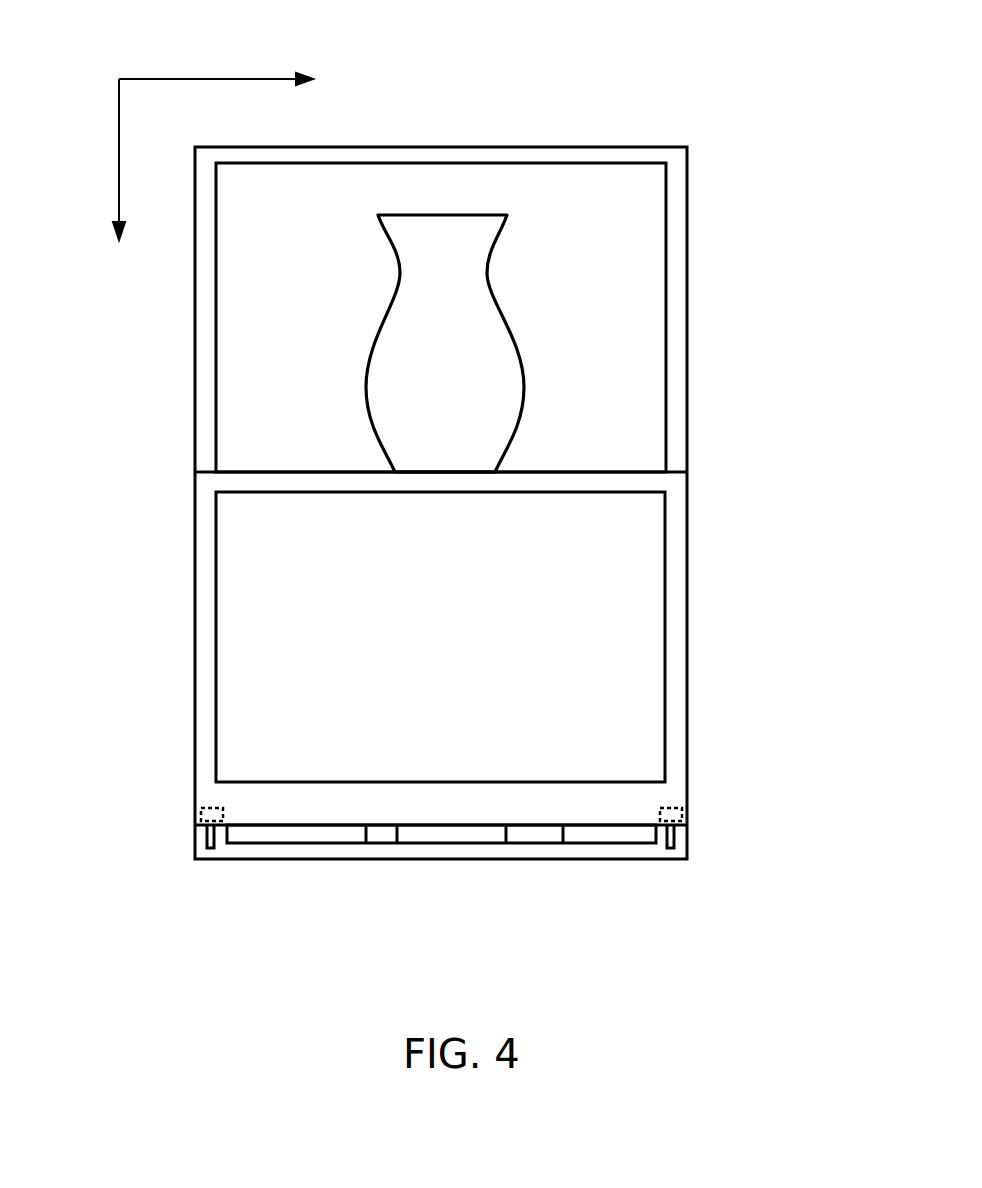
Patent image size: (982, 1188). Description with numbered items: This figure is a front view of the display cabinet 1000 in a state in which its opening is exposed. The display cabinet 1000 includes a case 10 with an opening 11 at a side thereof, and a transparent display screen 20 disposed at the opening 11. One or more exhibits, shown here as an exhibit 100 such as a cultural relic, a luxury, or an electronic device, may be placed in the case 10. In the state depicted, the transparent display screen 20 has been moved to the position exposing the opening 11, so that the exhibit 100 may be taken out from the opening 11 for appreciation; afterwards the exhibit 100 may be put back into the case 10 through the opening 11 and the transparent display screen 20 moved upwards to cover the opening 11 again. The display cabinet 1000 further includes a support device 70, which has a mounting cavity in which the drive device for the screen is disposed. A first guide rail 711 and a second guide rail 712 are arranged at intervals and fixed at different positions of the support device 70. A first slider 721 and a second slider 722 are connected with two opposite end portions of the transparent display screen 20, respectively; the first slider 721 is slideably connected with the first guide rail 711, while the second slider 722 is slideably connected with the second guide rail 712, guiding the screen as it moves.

The display cabinet 1000 is at (127, 32).
The case 10 is at (670, 235).
The opening 11 is at (628, 316).
The exhibit 100 is at (450, 375).
The transparent display screen 20 is at (668, 652).
The support device 70 is at (595, 848).
The first slider 721 is at (670, 815).
The second slider 722 is at (202, 813).
The first guide rail 711 is at (672, 840).
The second guide rail 712 is at (210, 841).